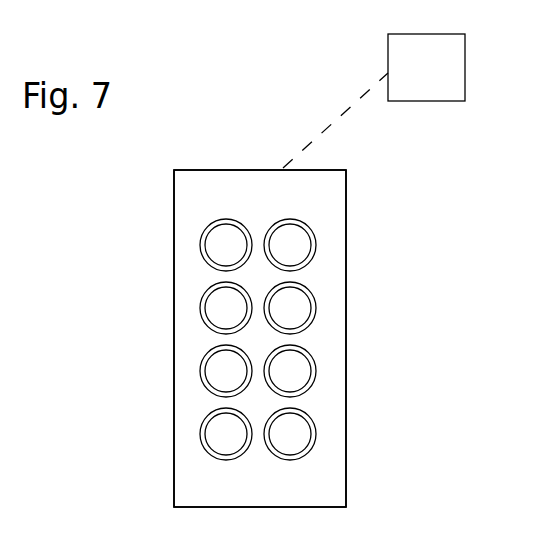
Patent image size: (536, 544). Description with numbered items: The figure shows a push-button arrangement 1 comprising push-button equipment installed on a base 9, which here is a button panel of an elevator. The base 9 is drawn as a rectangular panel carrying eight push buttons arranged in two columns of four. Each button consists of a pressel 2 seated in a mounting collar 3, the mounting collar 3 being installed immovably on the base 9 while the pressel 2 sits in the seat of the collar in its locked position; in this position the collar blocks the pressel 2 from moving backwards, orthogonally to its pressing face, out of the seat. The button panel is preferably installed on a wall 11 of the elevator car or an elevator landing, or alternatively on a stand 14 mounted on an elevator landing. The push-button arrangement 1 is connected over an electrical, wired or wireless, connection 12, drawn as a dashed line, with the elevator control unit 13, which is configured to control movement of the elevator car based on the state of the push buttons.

The push-button arrangement 1 is at (411, 402).
The pressel 2 is at (300, 307).
The mounting collar 3 is at (315, 315).
The base 9 is at (345, 260).
The wall 11 is at (218, 338).
The stand 14 is at (162, 280).
The connection 12 is at (340, 117).
The elevator control unit 13 is at (443, 87).